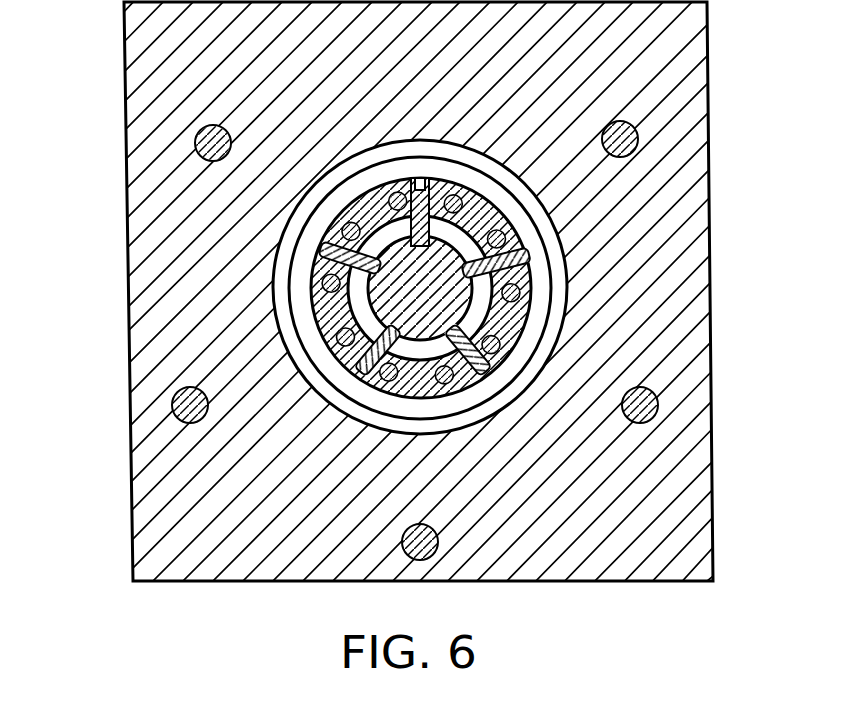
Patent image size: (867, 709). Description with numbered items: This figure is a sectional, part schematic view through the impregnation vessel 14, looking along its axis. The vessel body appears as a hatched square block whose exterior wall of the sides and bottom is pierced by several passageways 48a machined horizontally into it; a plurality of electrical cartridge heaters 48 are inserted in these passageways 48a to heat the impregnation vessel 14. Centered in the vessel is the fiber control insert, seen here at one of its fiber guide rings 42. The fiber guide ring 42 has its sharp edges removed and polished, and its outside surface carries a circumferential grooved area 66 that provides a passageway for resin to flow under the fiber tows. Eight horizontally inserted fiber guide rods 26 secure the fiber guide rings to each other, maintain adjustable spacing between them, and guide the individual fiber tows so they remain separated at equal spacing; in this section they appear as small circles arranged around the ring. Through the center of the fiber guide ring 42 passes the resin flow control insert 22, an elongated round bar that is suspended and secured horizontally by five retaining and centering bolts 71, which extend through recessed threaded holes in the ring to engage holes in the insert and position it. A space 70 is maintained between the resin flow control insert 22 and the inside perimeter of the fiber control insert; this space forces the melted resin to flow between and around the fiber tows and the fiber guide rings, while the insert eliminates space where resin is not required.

The impregnation vessel 14 is at (733, 136).
The electrical cartridge heater 48 is at (194, 153).
The passageway 48a is at (203, 132).
The circumferential grooved area 66 is at (300, 262).
The fiber guide ring 42 is at (288, 294).
The fiber guide rod 26 is at (353, 338).
The space 70 is at (483, 305).
The resin flow control insert 22 is at (485, 322).
The retaining and centering bolt 71 is at (523, 268).